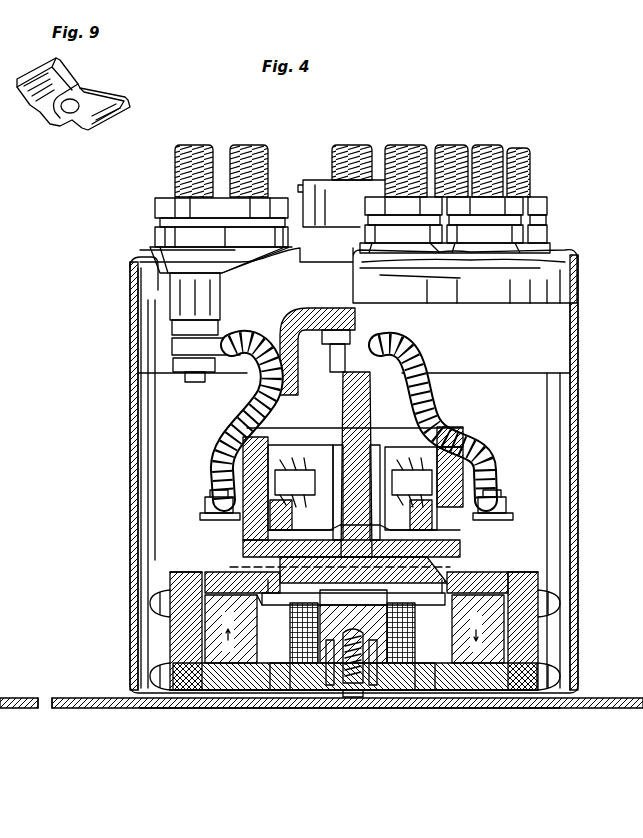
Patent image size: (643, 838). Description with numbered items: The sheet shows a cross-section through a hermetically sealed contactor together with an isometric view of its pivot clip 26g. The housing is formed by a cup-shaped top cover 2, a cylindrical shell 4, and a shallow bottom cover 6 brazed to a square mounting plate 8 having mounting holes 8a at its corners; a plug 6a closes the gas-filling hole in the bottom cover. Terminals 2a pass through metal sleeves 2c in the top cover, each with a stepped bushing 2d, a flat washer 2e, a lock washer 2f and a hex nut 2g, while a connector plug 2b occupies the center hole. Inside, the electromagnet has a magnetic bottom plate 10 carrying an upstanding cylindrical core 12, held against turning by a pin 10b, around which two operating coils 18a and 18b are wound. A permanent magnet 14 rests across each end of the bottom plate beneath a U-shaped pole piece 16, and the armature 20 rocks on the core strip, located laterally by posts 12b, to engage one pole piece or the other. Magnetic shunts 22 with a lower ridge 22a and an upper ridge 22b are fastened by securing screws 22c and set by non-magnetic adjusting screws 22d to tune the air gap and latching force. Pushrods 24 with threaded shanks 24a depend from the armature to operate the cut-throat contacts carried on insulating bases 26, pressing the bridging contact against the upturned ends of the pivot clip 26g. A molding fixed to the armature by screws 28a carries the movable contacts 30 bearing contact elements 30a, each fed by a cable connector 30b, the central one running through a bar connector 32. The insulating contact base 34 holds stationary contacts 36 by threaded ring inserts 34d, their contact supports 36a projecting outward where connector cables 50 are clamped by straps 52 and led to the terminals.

In FIG. 4, the top cover 2 is at (132, 342).
In FIG. 4, the terminal 2a is at (248, 143).
In FIG. 4, the connector plug 2b is at (310, 182).
In FIG. 4, the metal sleeve 2c is at (158, 260).
In FIG. 4, the stepped bushing 2d is at (160, 242).
In FIG. 4, the flat washer 2e is at (548, 236).
In FIG. 4, the lock washer 2f is at (548, 222).
In FIG. 4, the hex nut 2g is at (548, 204).
In FIG. 4, the shell 4 is at (130, 428).
In FIG. 4, the bottom cover 6 is at (176, 670).
In FIG. 4, the plug 6a is at (352, 700).
In FIG. 4, the mounting plate 8 is at (70, 708).
In FIG. 4, the mounting hole 8a is at (98, 708).
In FIG. 4, the bottom plate 10 is at (215, 700).
In FIG. 4, the pin 10b is at (345, 705).
In FIG. 4, the magnetic core 12 is at (385, 705).
In FIG. 4, the post 12b is at (330, 602).
In FIG. 4, the permanent magnet 14 is at (238, 700).
In FIG. 4, the pole piece 16 is at (222, 613).
In FIG. 4, the operating coil 18a is at (302, 705).
In FIG. 4, the operating coil 18b is at (424, 705).
In FIG. 4, the armature 20 is at (490, 548).
In FIG. 4, the magnetic shunt 22 is at (182, 643).
In FIG. 4, the lower ridge 22a is at (185, 700).
In FIG. 4, the upper ridge 22b is at (178, 583).
In FIG. 4, the securing screw 22c is at (160, 685).
In FIG. 4, the adjusting screw 22d is at (152, 604).
In FIG. 4, the pushrod 24 is at (275, 600).
In FIG. 4, the threaded shank 24a is at (497, 562).
In FIG. 4, the insulating base 26 is at (278, 700).
In FIG. 9, the pivot clip 26g is at (100, 103).
In FIG. 4, the screw 28a is at (278, 564).
In FIG. 4, the movable contact 30 is at (345, 430).
In FIG. 4, the contact element 30a is at (368, 433).
In FIG. 4, the cable connector 30b is at (362, 390).
In FIG. 4, the bar connector 32 is at (315, 312).
In FIG. 4, the contact base 34 is at (300, 428).
In FIG. 4, the ring insert 34d is at (478, 440).
In FIG. 4, the stationary contact 36 is at (282, 439).
In FIG. 4, the contact support 36a is at (351, 514).
In FIG. 4, the connector cable 50 is at (232, 400).
In FIG. 4, the strap 52 is at (205, 508).